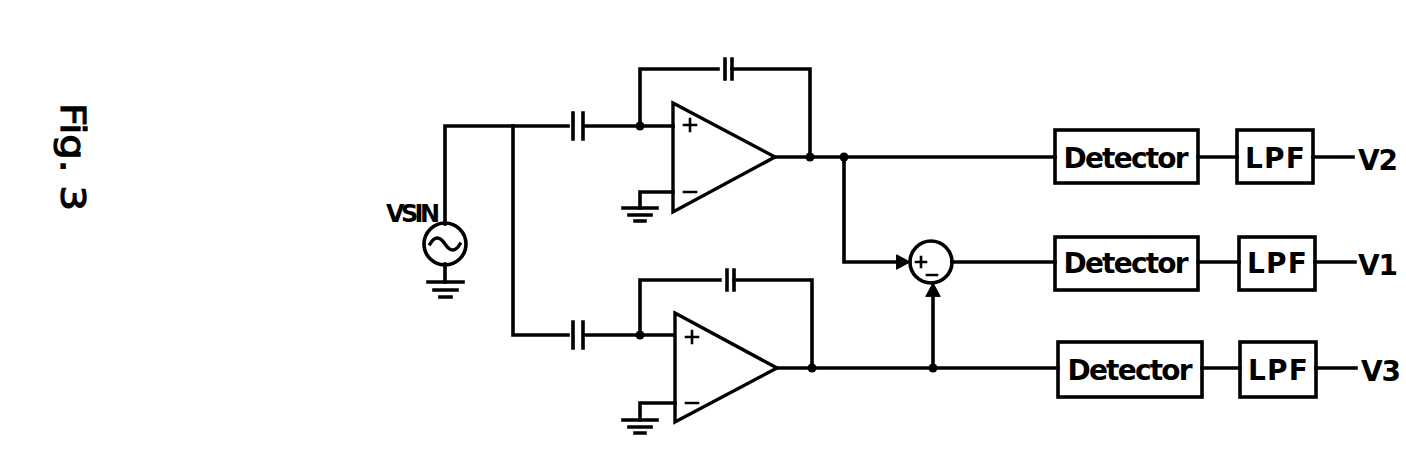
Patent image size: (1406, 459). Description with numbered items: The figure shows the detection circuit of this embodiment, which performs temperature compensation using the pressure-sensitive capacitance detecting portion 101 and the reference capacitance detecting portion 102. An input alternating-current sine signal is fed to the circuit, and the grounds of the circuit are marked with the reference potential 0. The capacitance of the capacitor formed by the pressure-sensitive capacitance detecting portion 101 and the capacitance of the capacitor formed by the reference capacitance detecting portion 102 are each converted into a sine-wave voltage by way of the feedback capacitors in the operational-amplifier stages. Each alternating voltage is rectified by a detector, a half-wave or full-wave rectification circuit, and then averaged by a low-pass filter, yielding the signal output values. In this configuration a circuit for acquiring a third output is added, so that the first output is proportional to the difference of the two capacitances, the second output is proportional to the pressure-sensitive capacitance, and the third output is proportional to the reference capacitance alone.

The ground (reference potential) 0 is at (547, 331).
The pressure-sensitive capacitance detecting portion 101 is at (577, 88).
The reference capacitance detecting portion 102 is at (579, 355).